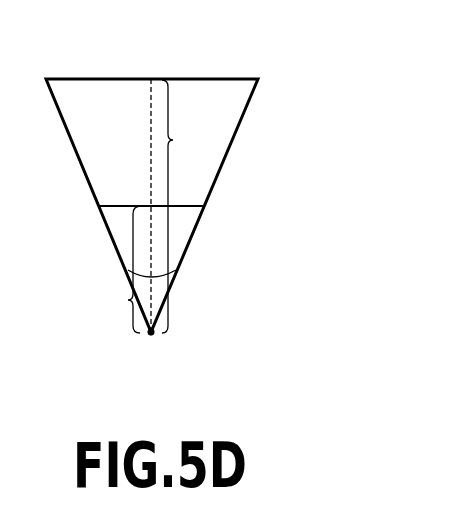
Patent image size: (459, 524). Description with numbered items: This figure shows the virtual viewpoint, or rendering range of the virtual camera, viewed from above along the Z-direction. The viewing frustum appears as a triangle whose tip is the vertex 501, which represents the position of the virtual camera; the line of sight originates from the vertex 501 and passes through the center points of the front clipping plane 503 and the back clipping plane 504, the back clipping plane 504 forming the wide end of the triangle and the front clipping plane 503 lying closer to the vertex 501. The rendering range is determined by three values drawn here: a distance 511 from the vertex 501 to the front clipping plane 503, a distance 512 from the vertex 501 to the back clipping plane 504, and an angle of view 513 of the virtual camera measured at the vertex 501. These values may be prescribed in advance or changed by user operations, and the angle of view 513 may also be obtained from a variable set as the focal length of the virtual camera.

The vertex 501 is at (149, 338).
The front clipping plane 503 is at (106, 205).
The back clipping plane 504 is at (87, 78).
The distance from the vertex to the front clipping plane 511 is at (114, 269).
The distance from the vertex to the back clipping plane 512 is at (189, 206).
The angle of view 513 is at (172, 275).